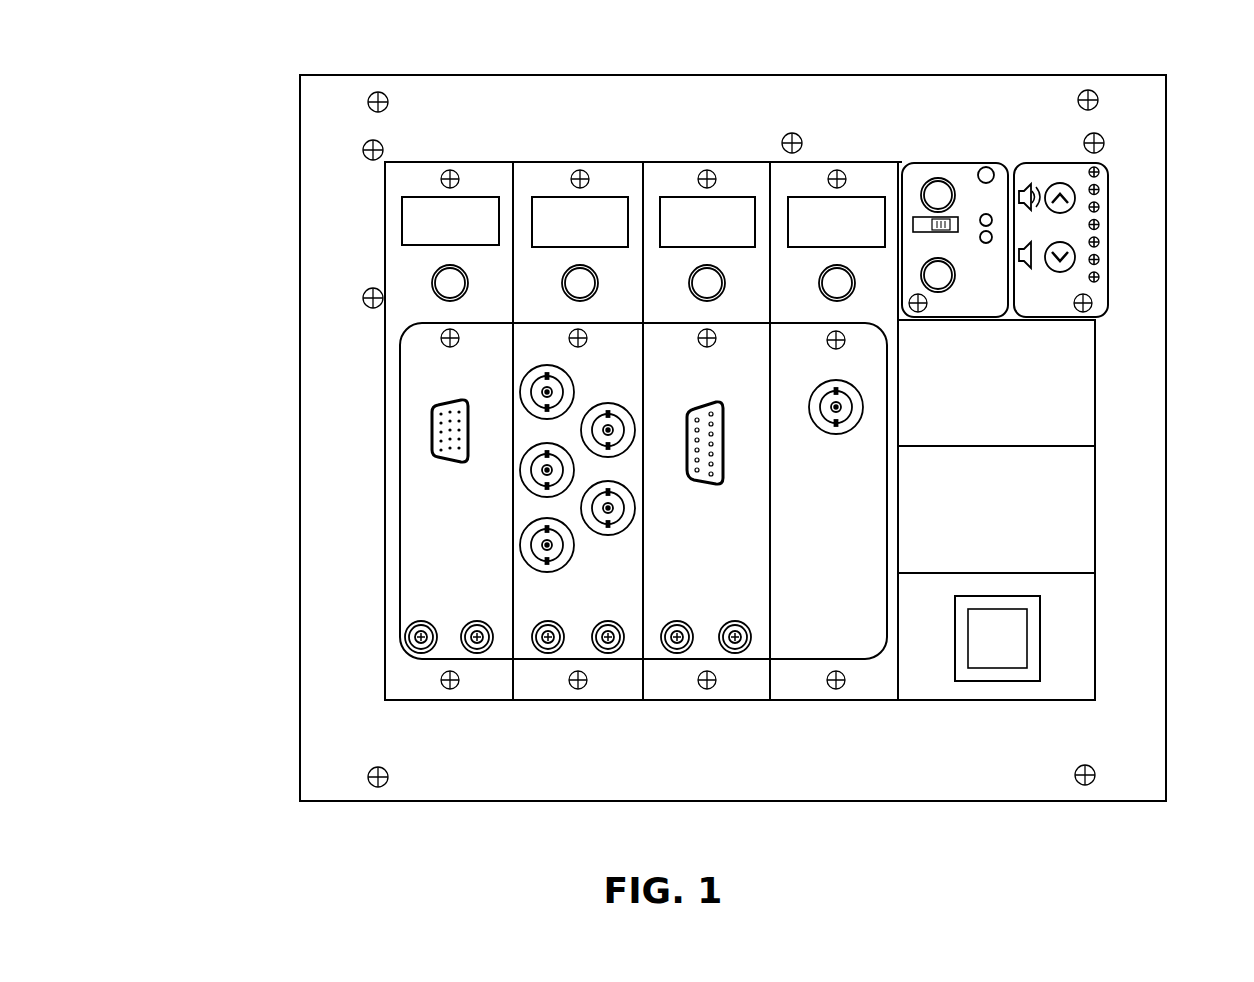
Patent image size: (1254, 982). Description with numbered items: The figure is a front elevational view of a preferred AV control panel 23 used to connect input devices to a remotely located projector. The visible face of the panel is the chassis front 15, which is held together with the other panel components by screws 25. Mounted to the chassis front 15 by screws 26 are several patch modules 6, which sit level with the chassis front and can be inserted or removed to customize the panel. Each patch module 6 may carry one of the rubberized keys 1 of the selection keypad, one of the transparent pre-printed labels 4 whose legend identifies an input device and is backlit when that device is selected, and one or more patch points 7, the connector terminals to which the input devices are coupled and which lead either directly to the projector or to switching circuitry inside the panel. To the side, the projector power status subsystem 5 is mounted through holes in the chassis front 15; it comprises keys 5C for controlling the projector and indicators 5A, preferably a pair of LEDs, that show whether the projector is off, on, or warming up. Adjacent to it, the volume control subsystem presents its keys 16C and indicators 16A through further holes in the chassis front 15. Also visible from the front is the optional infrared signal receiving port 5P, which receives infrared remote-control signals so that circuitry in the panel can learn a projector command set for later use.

The rubberized key 1 is at (433, 281).
The transparent label 4 is at (408, 223).
The projector power status subsystem 5 is at (972, 306).
The indicators 5A is at (993, 220).
The keys 5C is at (921, 270).
The infrared signal receiving port 5P is at (992, 168).
The patch module 6 is at (569, 718).
The patch point 7 is at (527, 540).
The chassis front 15 is at (1178, 161).
The indicators 16A is at (1076, 196).
The keys 16C is at (1075, 197).
The control panel 23 is at (285, 727).
The screws 25 is at (365, 148).
The screws 26 is at (706, 170).